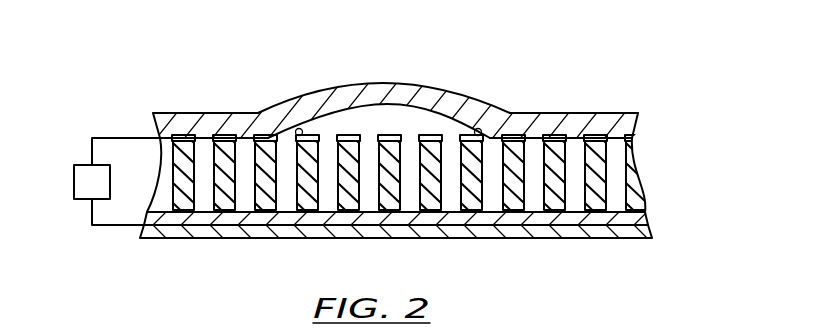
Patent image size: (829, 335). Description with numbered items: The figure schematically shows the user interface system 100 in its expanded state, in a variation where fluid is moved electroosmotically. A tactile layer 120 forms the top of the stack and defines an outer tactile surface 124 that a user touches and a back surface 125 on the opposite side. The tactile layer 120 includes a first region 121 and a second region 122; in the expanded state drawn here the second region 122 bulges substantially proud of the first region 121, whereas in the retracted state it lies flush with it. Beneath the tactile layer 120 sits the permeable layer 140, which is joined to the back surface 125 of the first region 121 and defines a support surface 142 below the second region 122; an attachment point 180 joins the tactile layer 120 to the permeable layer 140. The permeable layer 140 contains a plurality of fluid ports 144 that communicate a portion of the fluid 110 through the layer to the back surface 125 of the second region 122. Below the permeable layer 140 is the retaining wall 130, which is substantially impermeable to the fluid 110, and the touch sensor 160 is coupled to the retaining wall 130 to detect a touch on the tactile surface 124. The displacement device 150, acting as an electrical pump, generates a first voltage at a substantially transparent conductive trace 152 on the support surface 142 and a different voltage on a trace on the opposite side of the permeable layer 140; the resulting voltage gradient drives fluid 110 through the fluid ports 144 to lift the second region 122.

The user interface system 100 is at (121, 98).
The volume of fluid 110 is at (477, 132).
The tactile layer 120 is at (617, 130).
The first region 121 is at (586, 100).
The second region 122 is at (387, 74).
The tactile surface 124 is at (618, 113).
The back surface 125 is at (462, 124).
The retaining wall 130 is at (553, 223).
The permeable layer 140 is at (655, 142).
The support surface 142 is at (418, 112).
The fluid ports 144 is at (205, 200).
The displacement device 150 is at (82, 178).
The conductive trace 152 is at (226, 135).
The touch sensor 160 is at (487, 230).
The attachment point 180 is at (299, 129).